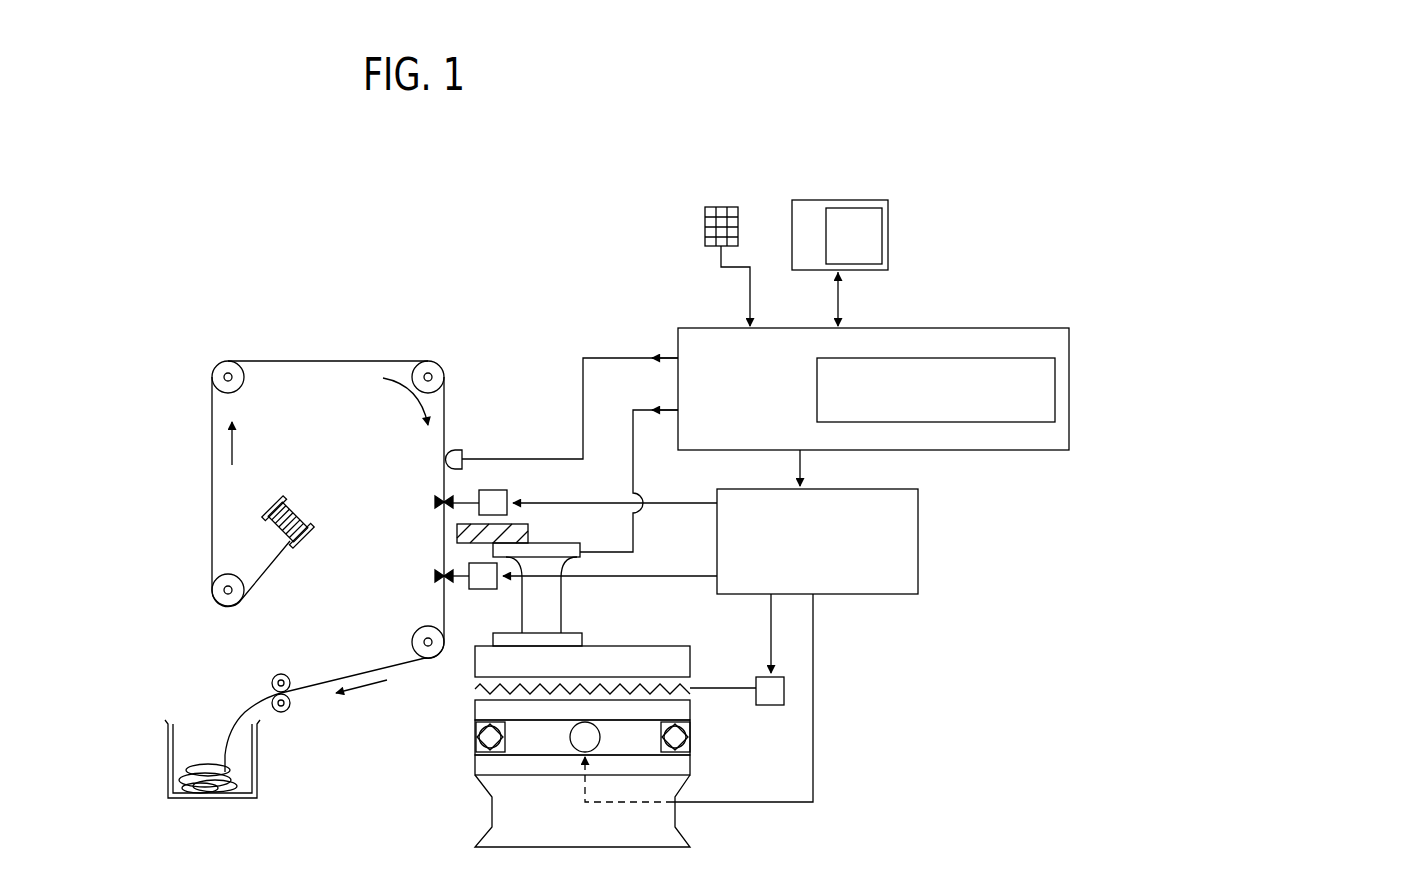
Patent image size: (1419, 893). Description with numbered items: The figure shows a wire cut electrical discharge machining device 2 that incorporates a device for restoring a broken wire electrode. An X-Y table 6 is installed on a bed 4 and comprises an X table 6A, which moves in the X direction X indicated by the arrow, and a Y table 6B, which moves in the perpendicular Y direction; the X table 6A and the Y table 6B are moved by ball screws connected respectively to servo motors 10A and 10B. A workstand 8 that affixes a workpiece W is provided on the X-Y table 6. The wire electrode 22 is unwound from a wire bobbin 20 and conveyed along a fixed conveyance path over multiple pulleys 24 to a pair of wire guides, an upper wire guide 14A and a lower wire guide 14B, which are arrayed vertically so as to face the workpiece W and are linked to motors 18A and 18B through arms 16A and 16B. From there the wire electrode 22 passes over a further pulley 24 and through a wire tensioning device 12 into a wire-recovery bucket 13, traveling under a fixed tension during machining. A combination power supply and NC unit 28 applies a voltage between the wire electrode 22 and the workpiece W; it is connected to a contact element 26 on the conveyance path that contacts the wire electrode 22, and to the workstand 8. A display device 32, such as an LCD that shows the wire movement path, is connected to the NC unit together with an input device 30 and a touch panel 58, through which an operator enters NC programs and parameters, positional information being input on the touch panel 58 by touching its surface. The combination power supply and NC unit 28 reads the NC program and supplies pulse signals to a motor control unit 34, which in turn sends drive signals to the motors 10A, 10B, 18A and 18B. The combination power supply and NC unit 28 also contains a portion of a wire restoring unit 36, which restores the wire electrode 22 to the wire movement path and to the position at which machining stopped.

The wire cut electrical discharge machining device 2 is at (762, 890).
The bed 4 is at (663, 815).
The X-Y table 6 is at (446, 739).
The X table 6A is at (691, 656).
The Y table 6B is at (692, 712).
The workstand 8 is at (562, 620).
The servo motor 10A is at (779, 706).
The servo motor 10B is at (571, 753).
The wire tensioning device 12 is at (272, 680).
The wire-recovery bucket 13 is at (258, 752).
The upper wire guide 14A is at (435, 501).
The lower wire guide 14B is at (435, 575).
The arm 16A is at (462, 498).
The arm 16B is at (466, 588).
The motor 18A is at (509, 493).
The motor 18B is at (486, 590).
The wire bobbin 20 is at (272, 500).
The wire electrode 22 is at (337, 352).
The pulleys 24 is at (226, 361).
The contact element 26 is at (456, 450).
The combination power supply and NC unit 28 is at (1090, 305).
The input device 30 is at (705, 230).
The display device 32 is at (864, 200).
The motor control unit 34 is at (918, 572).
The wire restoring unit 36 is at (1057, 372).
The touch panel 58 is at (870, 223).
The workpiece W is at (531, 538).
The X direction X is at (600, 710).